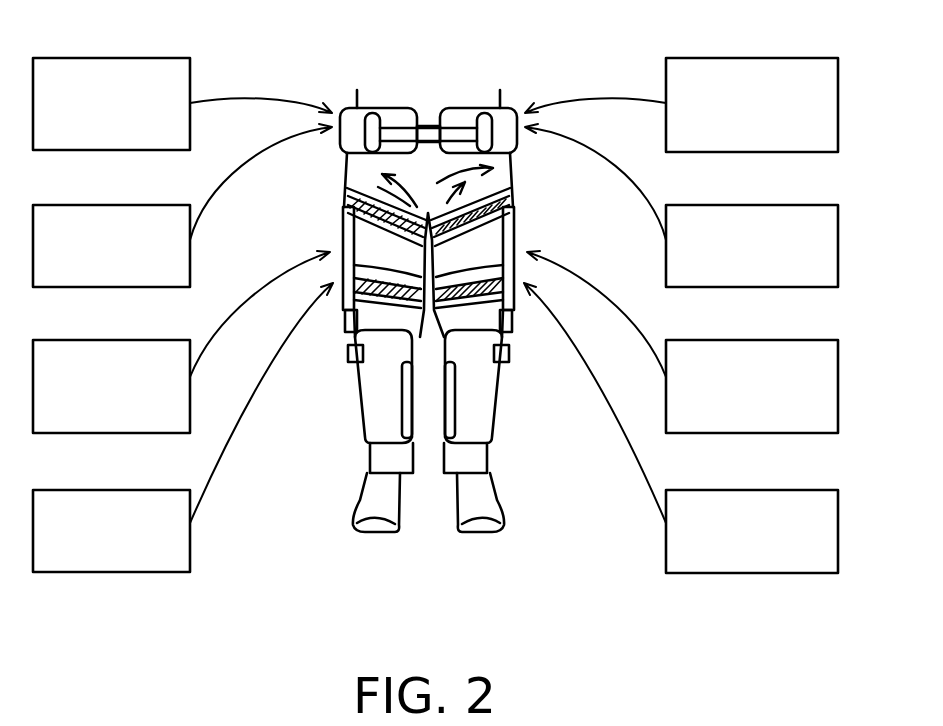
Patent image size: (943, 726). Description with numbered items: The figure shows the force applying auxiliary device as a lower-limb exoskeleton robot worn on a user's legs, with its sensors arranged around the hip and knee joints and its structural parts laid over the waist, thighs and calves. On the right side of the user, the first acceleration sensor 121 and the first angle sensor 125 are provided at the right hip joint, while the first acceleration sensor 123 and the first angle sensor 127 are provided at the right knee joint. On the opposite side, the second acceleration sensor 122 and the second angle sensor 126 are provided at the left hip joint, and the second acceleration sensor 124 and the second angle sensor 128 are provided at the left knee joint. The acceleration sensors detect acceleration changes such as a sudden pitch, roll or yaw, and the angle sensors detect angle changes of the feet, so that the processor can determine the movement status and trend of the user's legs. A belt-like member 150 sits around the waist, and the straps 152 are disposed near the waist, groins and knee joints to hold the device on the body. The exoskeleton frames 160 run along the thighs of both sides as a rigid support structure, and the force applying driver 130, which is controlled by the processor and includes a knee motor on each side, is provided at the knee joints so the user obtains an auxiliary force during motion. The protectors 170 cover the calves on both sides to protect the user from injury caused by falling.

The first acceleration sensor 121 is at (128, 58).
The second acceleration sensor 122 is at (762, 58).
The first acceleration sensor 123 is at (128, 340).
The second acceleration sensor 124 is at (762, 340).
The first angle sensor 125 is at (128, 205).
The second angle sensor 126 is at (762, 205).
The first angle sensor 127 is at (128, 490).
The second angle sensor 128 is at (762, 490).
The waist belt 150 is at (405, 132).
The strap 152 is at (510, 193).
The exoskeleton frame 160 is at (513, 213).
The force applying driver 130 is at (511, 303).
The protector 170 is at (484, 428).